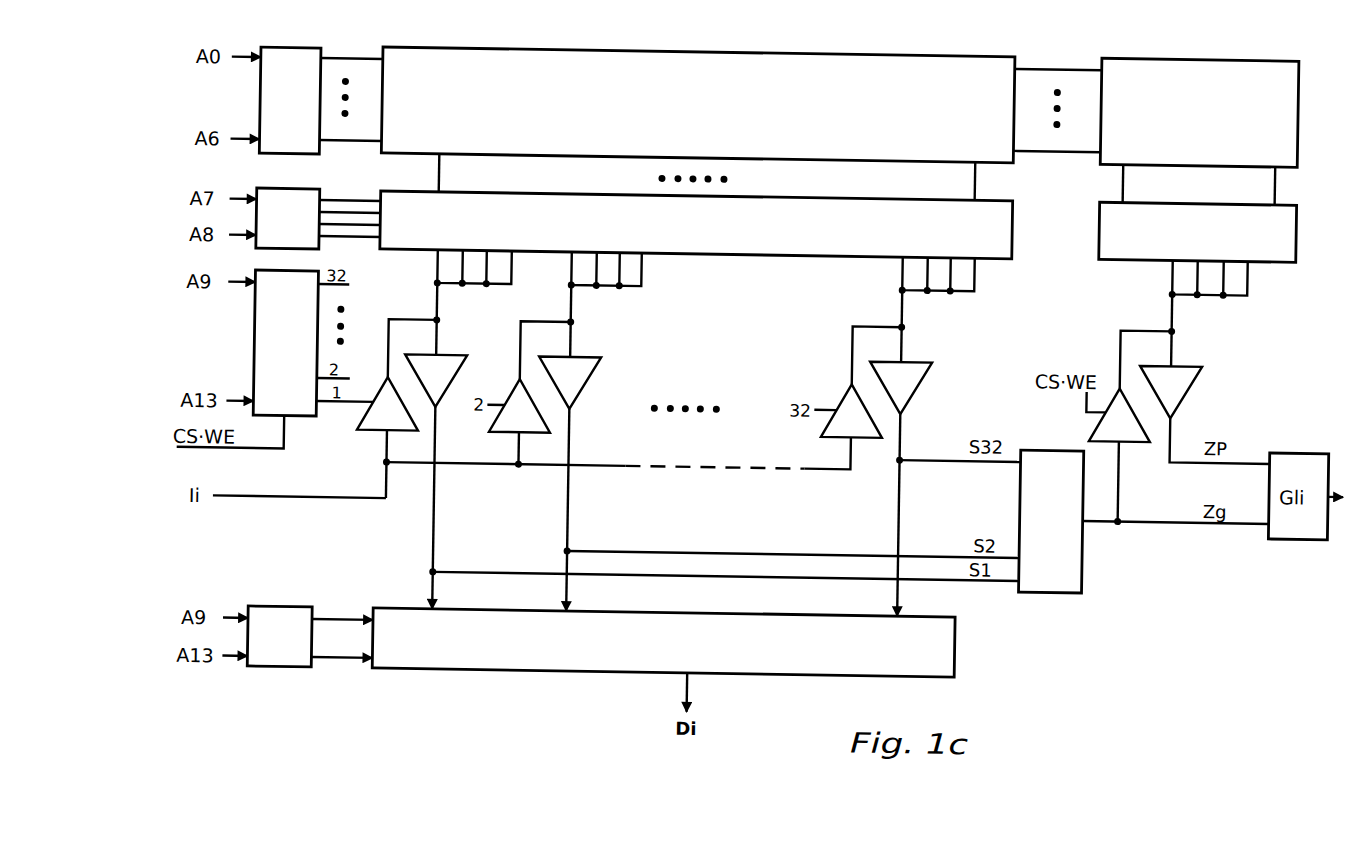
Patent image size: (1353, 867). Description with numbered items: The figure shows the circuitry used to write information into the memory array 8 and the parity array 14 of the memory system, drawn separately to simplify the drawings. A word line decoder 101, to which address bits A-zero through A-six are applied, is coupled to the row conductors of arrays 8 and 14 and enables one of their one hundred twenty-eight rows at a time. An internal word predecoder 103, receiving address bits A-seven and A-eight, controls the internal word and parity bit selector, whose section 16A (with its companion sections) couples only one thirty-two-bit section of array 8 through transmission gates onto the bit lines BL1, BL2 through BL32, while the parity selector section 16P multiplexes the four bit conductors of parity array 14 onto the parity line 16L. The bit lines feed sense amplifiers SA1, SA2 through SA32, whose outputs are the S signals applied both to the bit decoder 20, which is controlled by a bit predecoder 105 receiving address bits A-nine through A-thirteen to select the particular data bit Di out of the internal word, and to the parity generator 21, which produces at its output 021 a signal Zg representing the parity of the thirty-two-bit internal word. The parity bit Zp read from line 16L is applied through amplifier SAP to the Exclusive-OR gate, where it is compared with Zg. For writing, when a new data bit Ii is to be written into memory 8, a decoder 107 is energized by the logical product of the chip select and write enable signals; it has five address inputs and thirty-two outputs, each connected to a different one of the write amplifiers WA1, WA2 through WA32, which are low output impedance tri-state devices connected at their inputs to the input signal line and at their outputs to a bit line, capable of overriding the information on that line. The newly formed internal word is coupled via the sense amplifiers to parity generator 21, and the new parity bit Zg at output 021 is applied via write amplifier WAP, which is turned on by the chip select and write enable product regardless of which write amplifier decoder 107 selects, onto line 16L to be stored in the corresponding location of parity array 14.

The memory array 8 is at (783, 56).
The parity array 14 is at (1185, 56).
The bit decoder 20 is at (478, 661).
The parity generator 21 is at (1080, 564).
The output of parity generator 021 is at (1091, 513).
The word line decoder 101 is at (282, 55).
The internal word predecoder 103 is at (278, 207).
The bit predecoder 105 is at (279, 636).
The decoder 107 is at (285, 343).
The selector section 16A is at (696, 225).
The parity selector section 16P is at (1198, 232).
The parity line 16L is at (1180, 310).
The bit line BL1 is at (445, 321).
The bit line BL2 is at (579, 322).
The bit line BL32 is at (910, 322).
The sense amplifier SA1 is at (448, 383).
The sense amplifier SA2 is at (582, 383).
The sense amplifier SA32 is at (913, 383).
The parity amplifier SAP is at (1183, 380).
The write amplifier WA1 is at (378, 424).
The write amplifier WA2 is at (508, 436).
The write amplifier WA32 is at (830, 432).
The parity write amplifier WAP is at (1103, 414).